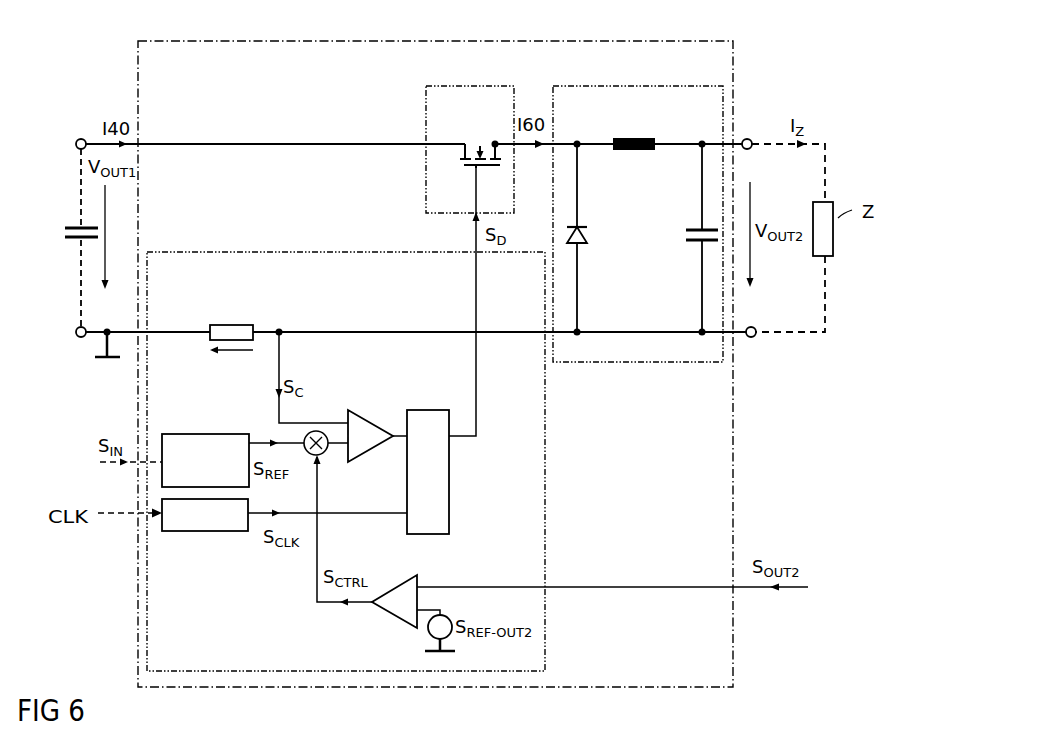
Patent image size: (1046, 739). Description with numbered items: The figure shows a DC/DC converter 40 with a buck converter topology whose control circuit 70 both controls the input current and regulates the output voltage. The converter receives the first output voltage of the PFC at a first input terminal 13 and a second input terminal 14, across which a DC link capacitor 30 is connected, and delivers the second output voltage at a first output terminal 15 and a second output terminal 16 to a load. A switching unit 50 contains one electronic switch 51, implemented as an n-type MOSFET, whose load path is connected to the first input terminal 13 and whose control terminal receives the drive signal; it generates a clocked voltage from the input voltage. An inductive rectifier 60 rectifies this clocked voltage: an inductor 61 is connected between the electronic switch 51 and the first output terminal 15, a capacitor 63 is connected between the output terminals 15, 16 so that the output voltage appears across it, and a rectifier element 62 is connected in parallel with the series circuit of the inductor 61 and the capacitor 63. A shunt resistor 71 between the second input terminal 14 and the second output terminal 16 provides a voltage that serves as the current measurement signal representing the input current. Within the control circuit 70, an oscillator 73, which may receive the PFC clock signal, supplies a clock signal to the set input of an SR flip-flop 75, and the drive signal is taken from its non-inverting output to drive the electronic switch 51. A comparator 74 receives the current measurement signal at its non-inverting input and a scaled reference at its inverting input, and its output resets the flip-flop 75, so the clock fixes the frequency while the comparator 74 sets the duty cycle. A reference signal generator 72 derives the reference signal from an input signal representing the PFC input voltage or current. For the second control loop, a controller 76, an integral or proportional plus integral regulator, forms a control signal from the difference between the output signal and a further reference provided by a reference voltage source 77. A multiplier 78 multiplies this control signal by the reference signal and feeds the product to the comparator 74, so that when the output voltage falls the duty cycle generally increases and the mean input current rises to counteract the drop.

The first input terminal 13 is at (83, 138).
The second input terminal 14 is at (79, 338).
The first output terminal 15 is at (747, 139).
The second output terminal 16 is at (754, 338).
The capacitor 30 is at (70, 225).
The DC/DC converter 40 is at (435, 350).
The switching unit 50 is at (462, 86).
The electronic switch 51 is at (458, 136).
The inductive rectifier 60 is at (632, 86).
The inductor 61 is at (630, 136).
The rectifier element 62 is at (588, 234).
The capacitor 63 is at (688, 228).
The control circuit 70 is at (303, 252).
The shunt resistor 71 is at (236, 324).
The reference signal generator 72 is at (184, 434).
The oscillator 73 is at (202, 533).
The comparator 74 is at (362, 409).
The SR flip-flop 75 is at (428, 410).
The controller 76 is at (400, 580).
The reference voltage source 77 is at (428, 635).
The multiplier 78 is at (325, 452).